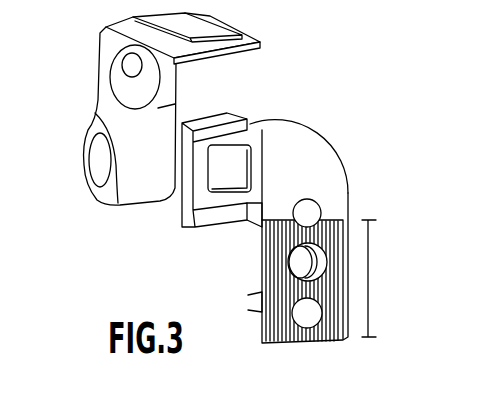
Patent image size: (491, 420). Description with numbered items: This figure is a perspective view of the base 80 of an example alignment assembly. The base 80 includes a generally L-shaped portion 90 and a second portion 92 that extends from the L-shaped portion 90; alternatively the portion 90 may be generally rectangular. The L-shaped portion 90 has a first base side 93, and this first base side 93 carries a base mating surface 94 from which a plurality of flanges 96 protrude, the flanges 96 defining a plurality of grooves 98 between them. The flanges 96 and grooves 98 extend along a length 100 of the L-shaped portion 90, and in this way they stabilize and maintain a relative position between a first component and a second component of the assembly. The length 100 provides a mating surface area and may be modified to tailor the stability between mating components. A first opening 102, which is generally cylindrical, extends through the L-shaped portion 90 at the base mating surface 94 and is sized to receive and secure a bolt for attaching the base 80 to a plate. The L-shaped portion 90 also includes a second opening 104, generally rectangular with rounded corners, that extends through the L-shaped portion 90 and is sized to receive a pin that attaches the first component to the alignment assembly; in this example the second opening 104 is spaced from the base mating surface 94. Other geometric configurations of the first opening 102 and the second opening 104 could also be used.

The base 80 is at (239, 211).
The L-shaped portion 90 is at (308, 122).
The second portion 92 is at (67, 121).
The first base side 93 is at (314, 170).
The base mating surface 94 is at (303, 304).
The flanges 96 is at (290, 356).
The grooves 98 is at (274, 356).
The length 100 is at (369, 310).
The first opening 102 is at (290, 260).
The second opening 104 is at (253, 142).